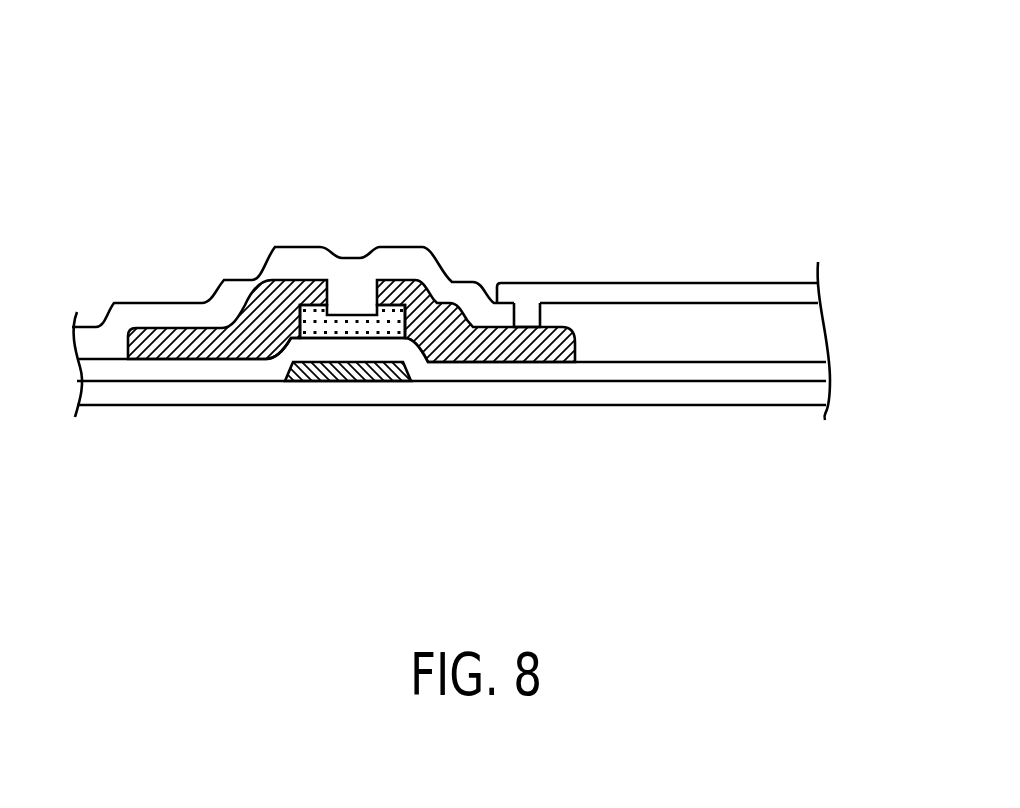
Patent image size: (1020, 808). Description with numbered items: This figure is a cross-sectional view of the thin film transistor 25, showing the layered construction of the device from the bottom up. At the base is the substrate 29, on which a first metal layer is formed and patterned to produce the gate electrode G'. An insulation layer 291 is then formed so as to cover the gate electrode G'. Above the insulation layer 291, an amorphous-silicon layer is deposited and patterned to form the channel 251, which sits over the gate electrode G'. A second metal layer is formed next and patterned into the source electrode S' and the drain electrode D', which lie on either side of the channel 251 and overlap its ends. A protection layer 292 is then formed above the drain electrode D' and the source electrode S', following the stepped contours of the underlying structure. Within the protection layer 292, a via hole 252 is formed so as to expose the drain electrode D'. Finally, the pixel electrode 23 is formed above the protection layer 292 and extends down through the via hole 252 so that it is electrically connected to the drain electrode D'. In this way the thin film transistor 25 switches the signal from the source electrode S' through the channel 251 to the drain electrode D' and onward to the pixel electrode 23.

The thin film transistor 25 is at (350, 300).
The channel 251 is at (428, 362).
The via hole 252 is at (528, 307).
The pixel electrode 23 is at (648, 293).
The substrate 29 is at (802, 393).
The insulation layer 291 is at (725, 370).
The protection layer 292 is at (160, 313).
The source electrode S' is at (225, 388).
The gate electrode G' is at (347, 428).
The drain electrode D' is at (475, 382).